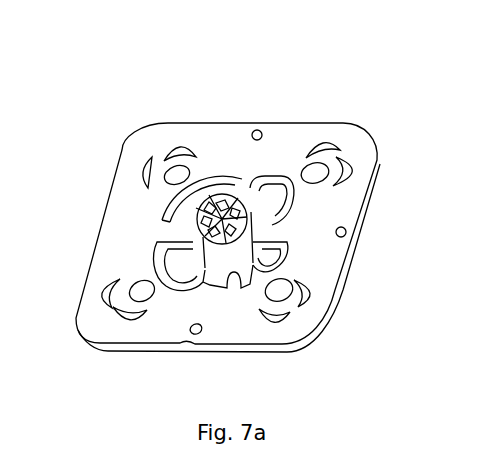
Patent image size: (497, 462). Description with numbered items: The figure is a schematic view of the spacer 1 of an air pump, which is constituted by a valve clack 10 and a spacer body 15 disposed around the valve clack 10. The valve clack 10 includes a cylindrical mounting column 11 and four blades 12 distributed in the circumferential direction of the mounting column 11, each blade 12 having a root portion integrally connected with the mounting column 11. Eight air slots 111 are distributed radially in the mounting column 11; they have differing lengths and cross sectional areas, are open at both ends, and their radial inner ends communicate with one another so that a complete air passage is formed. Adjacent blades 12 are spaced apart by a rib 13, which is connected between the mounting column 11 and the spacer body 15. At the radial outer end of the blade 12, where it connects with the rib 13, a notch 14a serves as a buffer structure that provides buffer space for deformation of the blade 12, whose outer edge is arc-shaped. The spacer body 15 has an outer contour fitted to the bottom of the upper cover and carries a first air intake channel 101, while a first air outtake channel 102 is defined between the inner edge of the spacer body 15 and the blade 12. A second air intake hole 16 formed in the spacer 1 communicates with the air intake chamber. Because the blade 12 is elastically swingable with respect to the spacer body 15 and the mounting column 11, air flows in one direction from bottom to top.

The spacer 1 is at (251, 60).
The valve clack 10 is at (177, 72).
The first air intake channel 101 is at (110, 303).
The first air outtake channel 102 is at (180, 217).
The mounting column 11 is at (250, 200).
The air slot 111 is at (212, 203).
The blade 12 is at (282, 192).
The rib 13 is at (238, 205).
The notch 14a is at (235, 290).
The spacer body 15 is at (343, 140).
The second air intake hole 16 is at (346, 231).